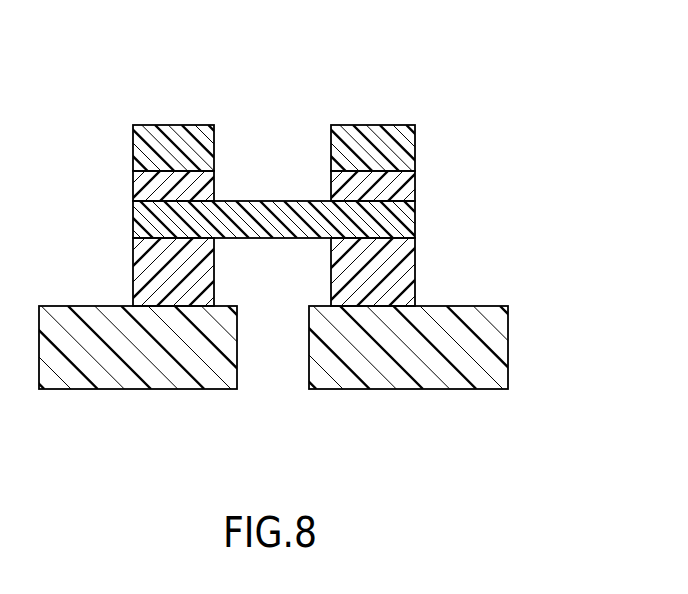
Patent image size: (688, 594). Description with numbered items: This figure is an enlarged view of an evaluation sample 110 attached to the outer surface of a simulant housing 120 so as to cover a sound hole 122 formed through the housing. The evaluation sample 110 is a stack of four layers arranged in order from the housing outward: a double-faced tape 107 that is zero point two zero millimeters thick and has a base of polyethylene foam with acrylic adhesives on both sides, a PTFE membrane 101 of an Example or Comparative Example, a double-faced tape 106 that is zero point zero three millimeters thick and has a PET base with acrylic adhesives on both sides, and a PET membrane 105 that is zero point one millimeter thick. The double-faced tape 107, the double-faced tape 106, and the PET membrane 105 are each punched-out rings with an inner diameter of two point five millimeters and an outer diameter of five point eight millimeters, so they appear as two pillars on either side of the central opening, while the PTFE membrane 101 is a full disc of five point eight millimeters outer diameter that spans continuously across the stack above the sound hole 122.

The evaluation sample 110 is at (412, 83).
The PET membrane 105 is at (403, 143).
The double-faced tape 106 is at (402, 189).
The PTFE membrane 101 is at (398, 222).
The double-faced tape 107 is at (398, 270).
The simulant housing 120 is at (488, 347).
The sound hole 122 is at (275, 355).